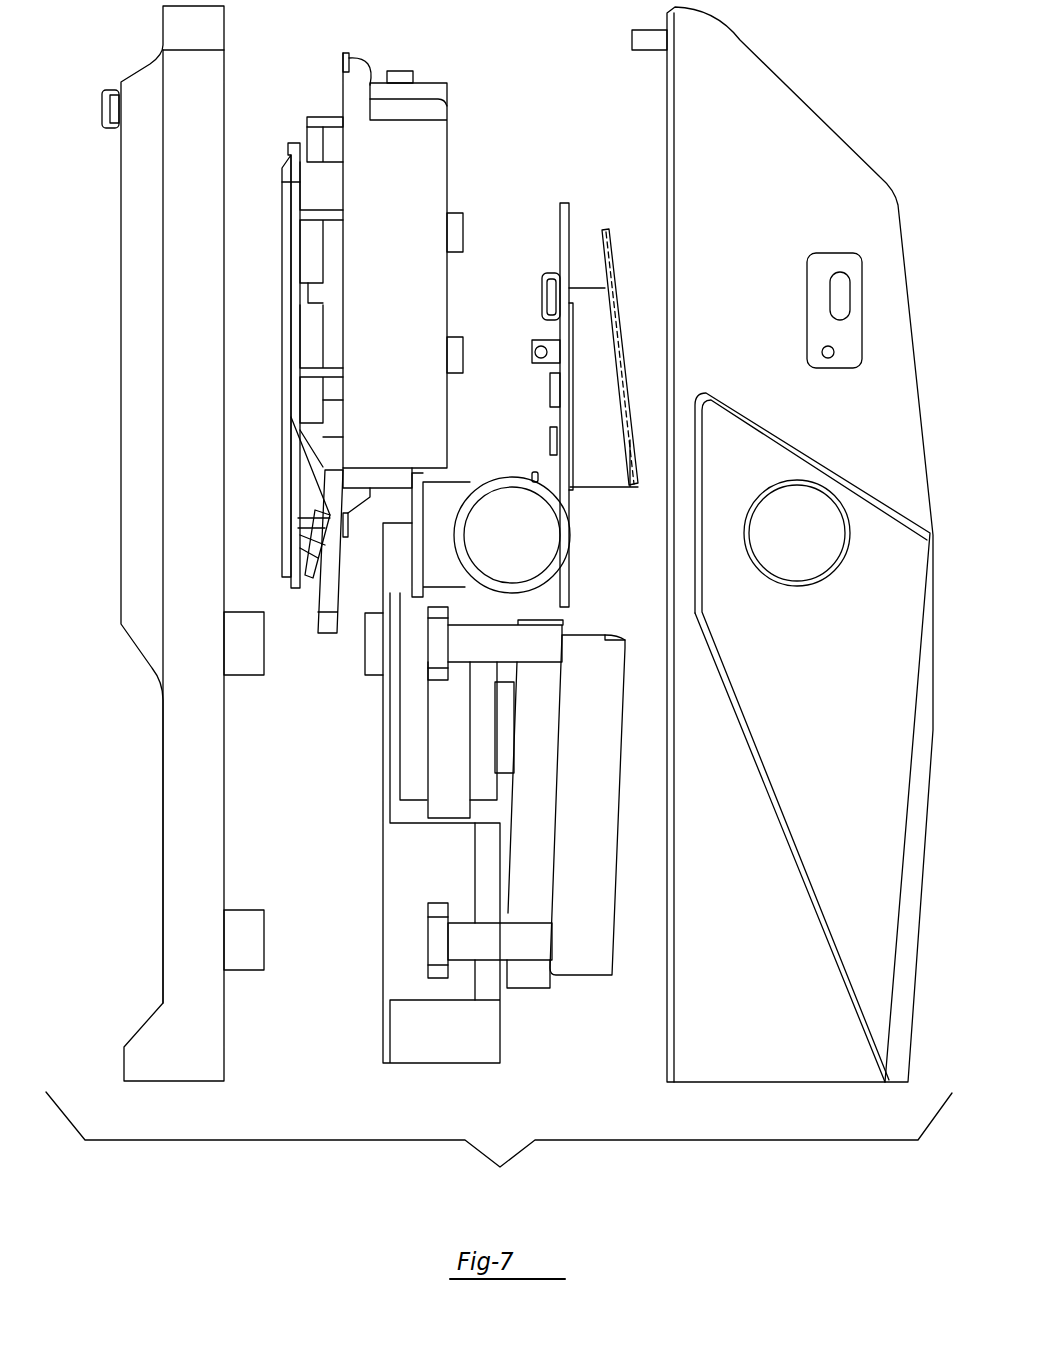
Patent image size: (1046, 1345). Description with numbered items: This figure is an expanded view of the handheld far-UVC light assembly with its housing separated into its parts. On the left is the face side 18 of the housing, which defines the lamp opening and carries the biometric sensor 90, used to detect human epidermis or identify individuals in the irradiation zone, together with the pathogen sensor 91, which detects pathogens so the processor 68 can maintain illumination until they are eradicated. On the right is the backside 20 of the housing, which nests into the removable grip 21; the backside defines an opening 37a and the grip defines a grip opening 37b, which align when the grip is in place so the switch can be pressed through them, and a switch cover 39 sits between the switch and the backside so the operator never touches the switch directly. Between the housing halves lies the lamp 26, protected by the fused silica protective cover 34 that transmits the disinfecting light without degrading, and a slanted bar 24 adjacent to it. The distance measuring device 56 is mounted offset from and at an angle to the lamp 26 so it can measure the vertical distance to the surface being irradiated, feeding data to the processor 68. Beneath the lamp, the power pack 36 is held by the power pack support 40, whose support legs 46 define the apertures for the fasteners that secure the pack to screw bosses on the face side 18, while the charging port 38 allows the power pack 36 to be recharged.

The face side 18 is at (204, 334).
The backside 20 is at (783, 173).
The removable grip 21 is at (863, 761).
The slanted bar 24 is at (612, 240).
The lamp 26 is at (402, 299).
The fused silica protective cover 34 is at (282, 233).
The power pack 36 is at (598, 813).
The opening 37a is at (830, 568).
The grip opening 37b is at (838, 578).
The charging port 38 is at (540, 295).
The switch cover 39 is at (523, 536).
The power pack support 40 is at (542, 791).
The support legs 46 is at (510, 653).
The distance measuring device 56 is at (305, 568).
The processor 68 is at (550, 418).
The biometric sensor 90 is at (115, 92).
The pathogen sensor 91 is at (113, 128).